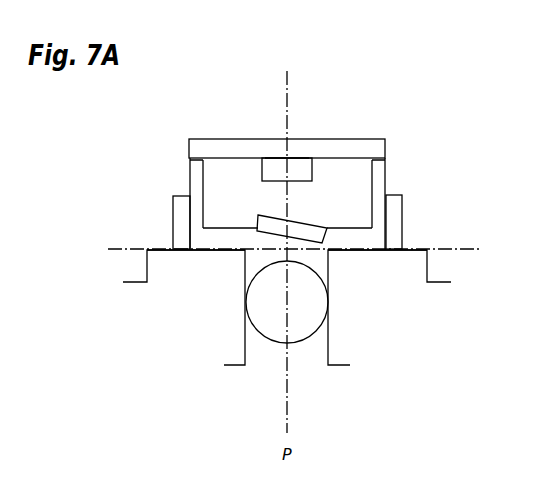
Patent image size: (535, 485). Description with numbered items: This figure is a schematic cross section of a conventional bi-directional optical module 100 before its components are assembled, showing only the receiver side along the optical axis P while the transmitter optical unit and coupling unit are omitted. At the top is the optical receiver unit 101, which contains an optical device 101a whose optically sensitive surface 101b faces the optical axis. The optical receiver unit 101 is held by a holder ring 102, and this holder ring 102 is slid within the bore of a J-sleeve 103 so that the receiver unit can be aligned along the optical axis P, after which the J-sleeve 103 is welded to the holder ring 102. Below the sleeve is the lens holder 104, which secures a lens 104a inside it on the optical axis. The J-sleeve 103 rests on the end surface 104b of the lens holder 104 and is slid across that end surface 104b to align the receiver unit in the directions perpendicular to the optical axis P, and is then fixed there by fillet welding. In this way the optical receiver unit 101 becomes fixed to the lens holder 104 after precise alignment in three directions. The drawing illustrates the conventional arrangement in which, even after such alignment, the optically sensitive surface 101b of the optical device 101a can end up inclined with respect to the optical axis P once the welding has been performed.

The optical module 100 is at (314, 222).
The optical receiver unit 101 is at (322, 162).
The optical device 101a is at (278, 159).
The optically sensitive surface 101b is at (297, 182).
The holder ring 102 is at (383, 174).
The J-sleeve 103 is at (395, 200).
The lens holder 104 is at (314, 286).
The lens 104a is at (278, 331).
The end surface 104b is at (420, 249).